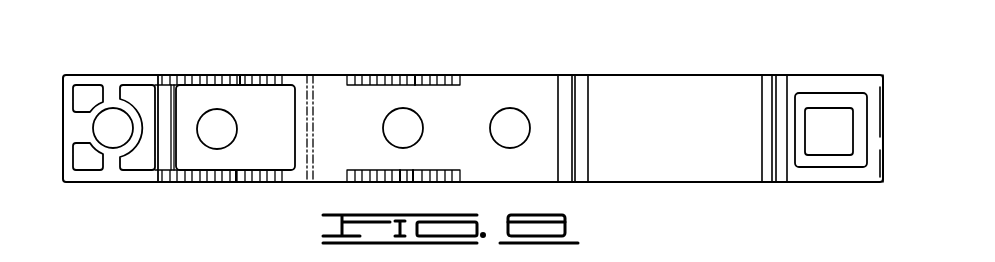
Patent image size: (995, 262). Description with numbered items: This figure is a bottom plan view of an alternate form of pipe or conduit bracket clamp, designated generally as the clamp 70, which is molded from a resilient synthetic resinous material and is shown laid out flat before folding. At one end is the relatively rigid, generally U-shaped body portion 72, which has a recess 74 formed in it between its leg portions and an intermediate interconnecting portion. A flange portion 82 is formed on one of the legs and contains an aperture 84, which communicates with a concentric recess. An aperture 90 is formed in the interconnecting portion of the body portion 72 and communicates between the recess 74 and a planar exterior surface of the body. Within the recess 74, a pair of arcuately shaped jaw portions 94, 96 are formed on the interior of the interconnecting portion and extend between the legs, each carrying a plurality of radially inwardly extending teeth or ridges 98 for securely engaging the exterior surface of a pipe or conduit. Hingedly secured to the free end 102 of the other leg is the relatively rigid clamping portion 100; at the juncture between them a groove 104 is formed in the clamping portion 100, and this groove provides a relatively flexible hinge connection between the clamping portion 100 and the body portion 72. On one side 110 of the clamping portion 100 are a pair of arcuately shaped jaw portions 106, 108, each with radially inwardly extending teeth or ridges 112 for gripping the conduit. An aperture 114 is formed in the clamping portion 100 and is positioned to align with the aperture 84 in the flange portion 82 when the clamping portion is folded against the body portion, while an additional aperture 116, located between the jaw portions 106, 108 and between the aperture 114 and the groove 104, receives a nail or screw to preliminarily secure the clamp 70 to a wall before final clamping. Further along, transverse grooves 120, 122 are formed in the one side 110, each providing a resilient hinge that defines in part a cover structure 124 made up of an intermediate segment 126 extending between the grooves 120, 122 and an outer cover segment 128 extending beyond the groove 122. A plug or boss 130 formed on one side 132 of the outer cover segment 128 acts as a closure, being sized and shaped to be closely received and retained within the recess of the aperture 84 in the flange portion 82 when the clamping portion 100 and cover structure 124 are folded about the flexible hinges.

The pipe clamp 70 is at (302, 75).
The body portion 72 is at (295, 75).
The recess 74 is at (224, 160).
The flange portion 82 is at (68, 96).
The aperture 84 is at (96, 128).
The aperture 90 is at (215, 113).
The jaw portion 94 is at (200, 80).
The jaw portion 96 is at (202, 176).
The teeth or ridges 98 is at (240, 80).
The clamping portion 100 is at (498, 85).
The free end 102 is at (302, 160).
The groove 104 is at (312, 100).
The jaw portion 106 is at (378, 83).
The jaw portion 108 is at (399, 178).
The one side 110 is at (463, 95).
The teeth or ridges 112 is at (415, 82).
The aperture 114 is at (521, 117).
The aperture 116 is at (412, 122).
The transverse groove 120 is at (572, 105).
The transverse groove 122 is at (768, 102).
The cover structure 124 is at (677, 90).
The intermediate segment 126 is at (645, 88).
The outer cover segment 128 is at (808, 82).
The plug or boss 130 is at (830, 158).
The one side 132 is at (830, 82).